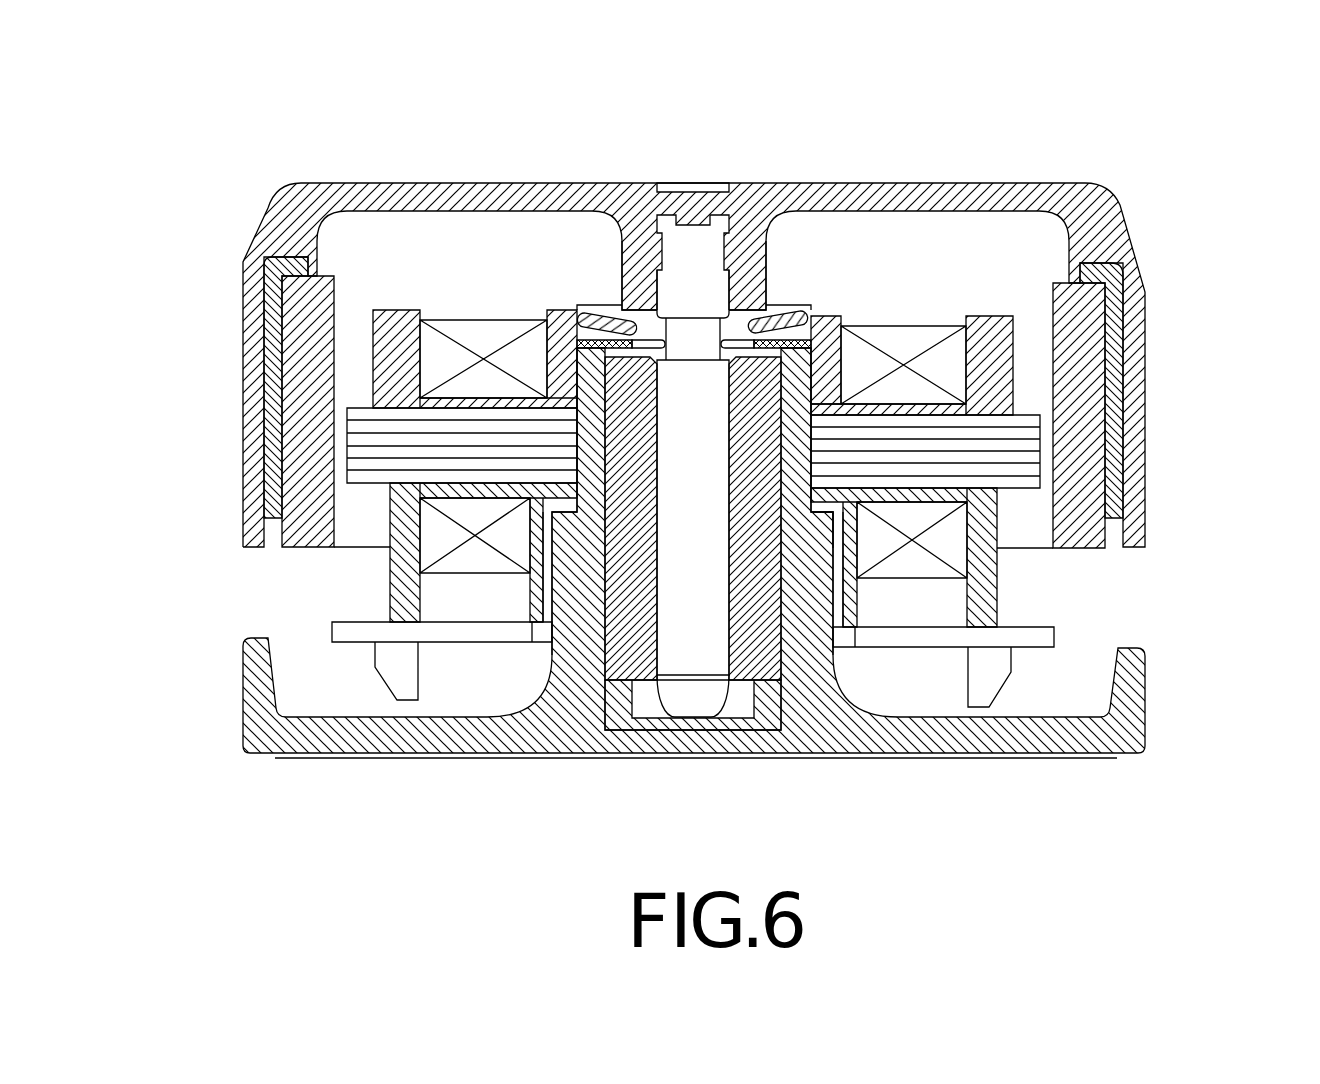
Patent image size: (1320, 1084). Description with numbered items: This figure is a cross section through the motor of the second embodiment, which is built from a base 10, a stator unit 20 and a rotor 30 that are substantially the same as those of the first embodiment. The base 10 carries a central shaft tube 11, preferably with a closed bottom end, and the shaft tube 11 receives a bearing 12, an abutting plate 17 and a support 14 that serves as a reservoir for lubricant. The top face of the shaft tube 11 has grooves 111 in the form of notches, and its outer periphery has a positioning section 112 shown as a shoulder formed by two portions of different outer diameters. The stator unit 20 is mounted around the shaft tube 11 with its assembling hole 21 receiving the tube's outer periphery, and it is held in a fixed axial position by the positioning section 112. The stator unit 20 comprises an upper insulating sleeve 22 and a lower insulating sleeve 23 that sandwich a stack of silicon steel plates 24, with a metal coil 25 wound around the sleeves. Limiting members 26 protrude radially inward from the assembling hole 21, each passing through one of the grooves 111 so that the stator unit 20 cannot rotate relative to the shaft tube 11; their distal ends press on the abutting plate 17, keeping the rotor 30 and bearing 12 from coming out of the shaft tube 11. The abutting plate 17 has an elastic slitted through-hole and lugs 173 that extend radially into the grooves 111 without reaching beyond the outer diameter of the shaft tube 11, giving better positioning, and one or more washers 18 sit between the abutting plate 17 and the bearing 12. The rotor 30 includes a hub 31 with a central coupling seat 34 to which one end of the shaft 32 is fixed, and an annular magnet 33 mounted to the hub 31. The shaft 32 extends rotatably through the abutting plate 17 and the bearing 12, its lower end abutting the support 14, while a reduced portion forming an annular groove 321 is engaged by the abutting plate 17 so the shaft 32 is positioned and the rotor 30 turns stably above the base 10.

The base 10 is at (1037, 745).
The shaft tube 11 is at (583, 543).
The bearing 12 is at (762, 638).
The support 14 is at (620, 707).
The abutting plate 17 is at (648, 340).
The lug 173 is at (567, 305).
The washer 18 is at (846, 327).
The stator unit 20 is at (1046, 637).
The assembling hole 21 is at (822, 389).
The upper insulating sleeve 22 is at (1002, 317).
The lower insulating sleeve 23 is at (997, 579).
The silicon steel plates 24 is at (355, 438).
The metal coil 25 is at (453, 327).
The limiting member 26 is at (612, 316).
The rotor 30 is at (1140, 290).
The hub 31 is at (990, 184).
The shaft 32 is at (682, 655).
The annular groove 321 is at (691, 335).
The annular magnet 33 is at (303, 360).
The coupling seat 34 is at (753, 270).
The groove 111 is at (580, 298).
The positioning section 112 is at (817, 513).